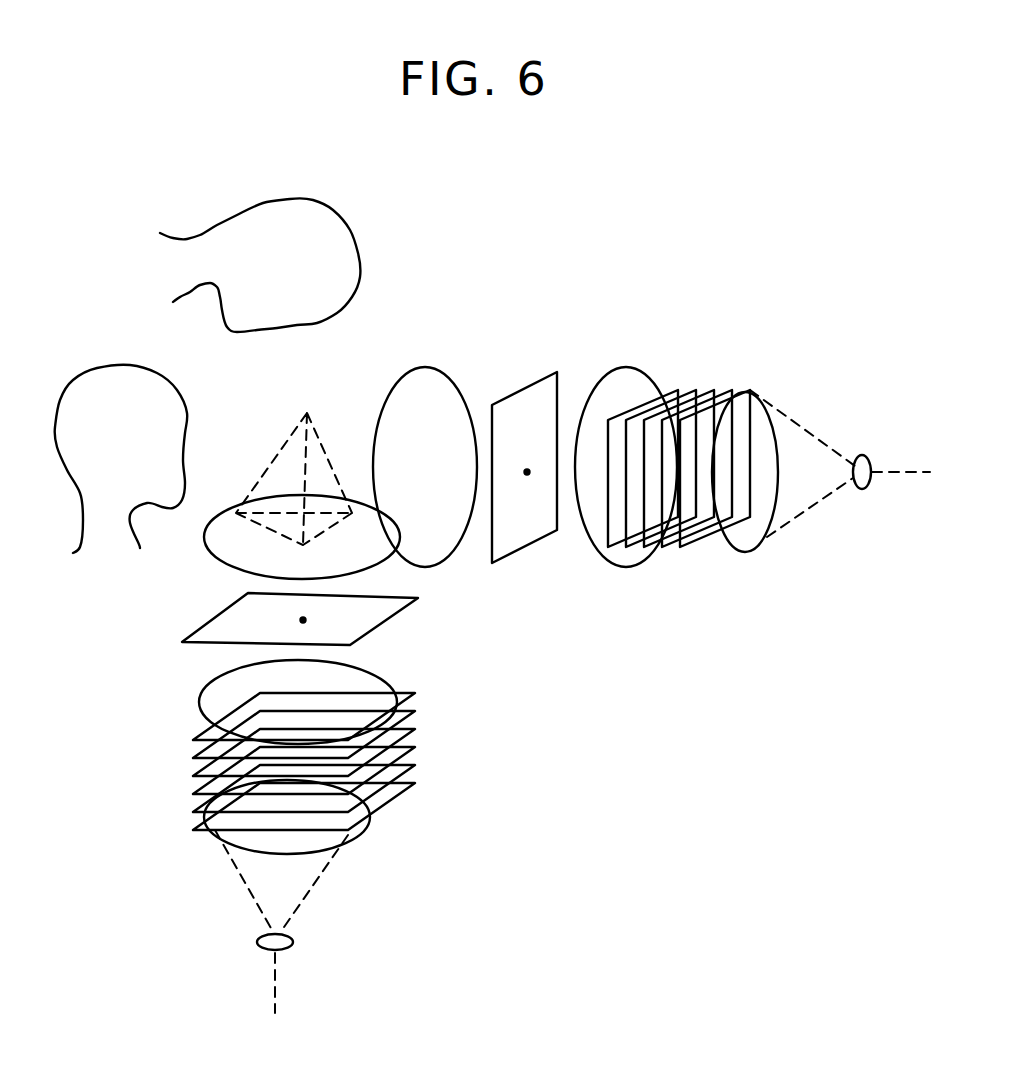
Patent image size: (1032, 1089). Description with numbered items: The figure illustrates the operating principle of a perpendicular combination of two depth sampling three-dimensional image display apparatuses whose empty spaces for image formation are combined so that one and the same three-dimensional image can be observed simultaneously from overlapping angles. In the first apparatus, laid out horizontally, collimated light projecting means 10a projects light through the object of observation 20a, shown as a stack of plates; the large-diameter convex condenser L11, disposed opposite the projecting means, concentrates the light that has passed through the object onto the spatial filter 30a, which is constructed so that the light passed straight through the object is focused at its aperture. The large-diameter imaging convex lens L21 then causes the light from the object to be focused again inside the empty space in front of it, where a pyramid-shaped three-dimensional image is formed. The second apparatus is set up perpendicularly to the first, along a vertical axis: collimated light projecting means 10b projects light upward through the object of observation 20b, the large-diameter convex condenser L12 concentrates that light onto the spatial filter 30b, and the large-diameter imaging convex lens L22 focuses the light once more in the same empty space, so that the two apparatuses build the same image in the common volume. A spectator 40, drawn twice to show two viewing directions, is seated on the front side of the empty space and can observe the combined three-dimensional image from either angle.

The spectator 40 is at (195, 253).
The large-diameter imaging convex lens L22 is at (220, 550).
The large-diameter imaging convex lens L21 is at (425, 382).
The spatial filter 30a is at (520, 543).
The large-diameter convex condenser L11 is at (628, 382).
The object of observation 20a is at (679, 549).
The collimated light projecting means 10a is at (813, 516).
The spatial filter 30b is at (367, 622).
The large-diameter convex condenser L12 is at (210, 697).
The object of observation 20b is at (420, 748).
The collimated light projecting means 10b is at (317, 889).